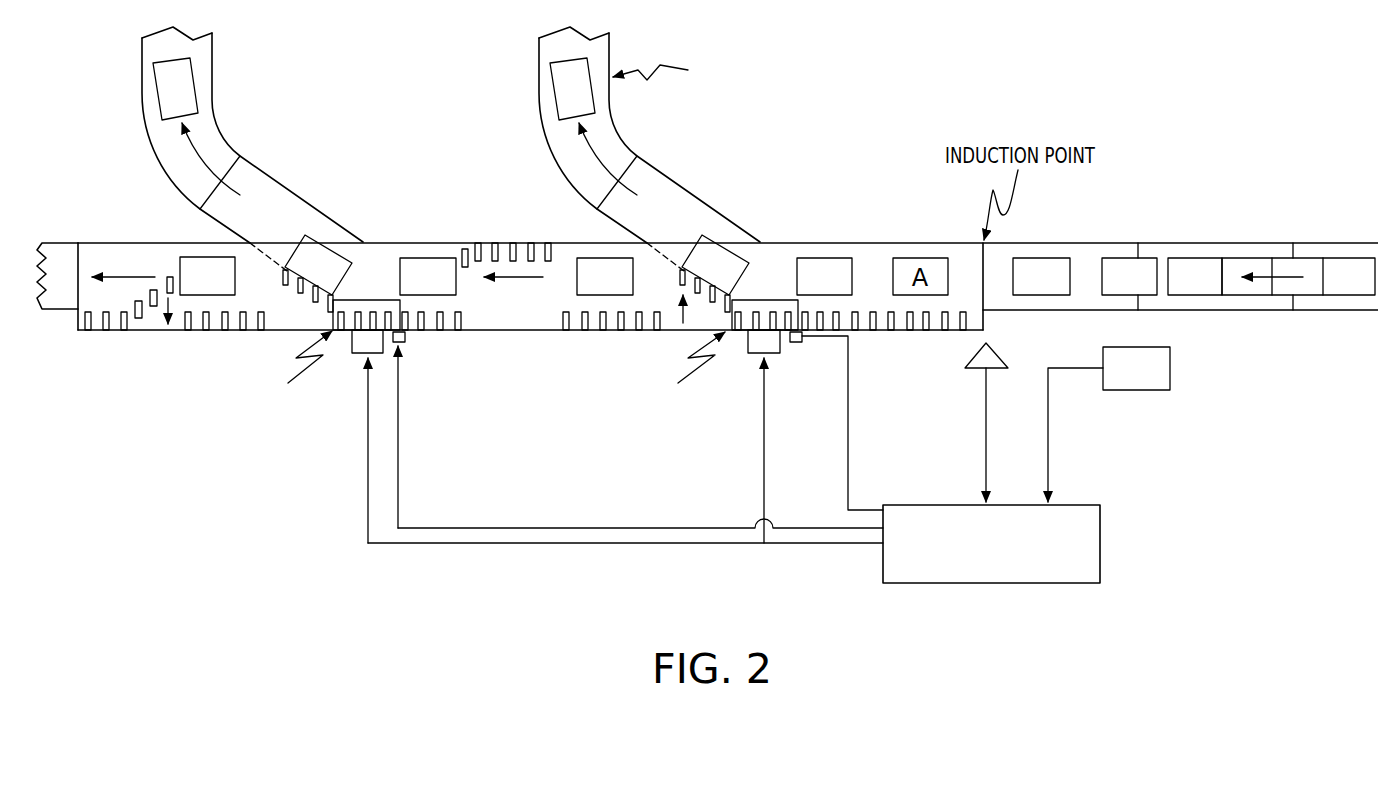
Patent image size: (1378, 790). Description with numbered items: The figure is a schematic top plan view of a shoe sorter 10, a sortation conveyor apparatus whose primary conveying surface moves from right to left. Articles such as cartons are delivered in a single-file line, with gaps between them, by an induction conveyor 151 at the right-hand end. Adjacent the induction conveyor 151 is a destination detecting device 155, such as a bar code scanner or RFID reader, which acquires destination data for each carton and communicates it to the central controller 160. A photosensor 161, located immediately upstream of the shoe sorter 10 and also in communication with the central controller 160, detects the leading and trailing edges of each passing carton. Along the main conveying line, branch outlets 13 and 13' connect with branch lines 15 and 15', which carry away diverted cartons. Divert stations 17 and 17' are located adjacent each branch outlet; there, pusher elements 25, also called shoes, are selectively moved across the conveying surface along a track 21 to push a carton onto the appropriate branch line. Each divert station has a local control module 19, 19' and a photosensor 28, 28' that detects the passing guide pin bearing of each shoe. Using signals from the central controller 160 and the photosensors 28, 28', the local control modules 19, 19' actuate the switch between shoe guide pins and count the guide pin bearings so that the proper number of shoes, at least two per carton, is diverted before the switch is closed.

The shoe sorter 10 is at (924, 77).
The branch outlet 13 is at (709, 225).
The branch outlet 13' is at (314, 225).
The branch line 15 is at (641, 135).
The branch line 15' is at (252, 135).
The divert station 17 is at (717, 382).
The divert station 17' is at (374, 375).
The local control module 19 is at (754, 436).
The local control module 19' is at (605, 436).
The track 21 is at (278, 253).
The pusher element 25 is at (495, 243).
The photosensor 28 is at (836, 421).
The photosensor 28' is at (638, 430).
The induction conveyor 151 is at (1146, 234).
The destination detecting device 155 is at (1109, 424).
The central controller 160 is at (1101, 542).
The photosensor 161 is at (1001, 354).